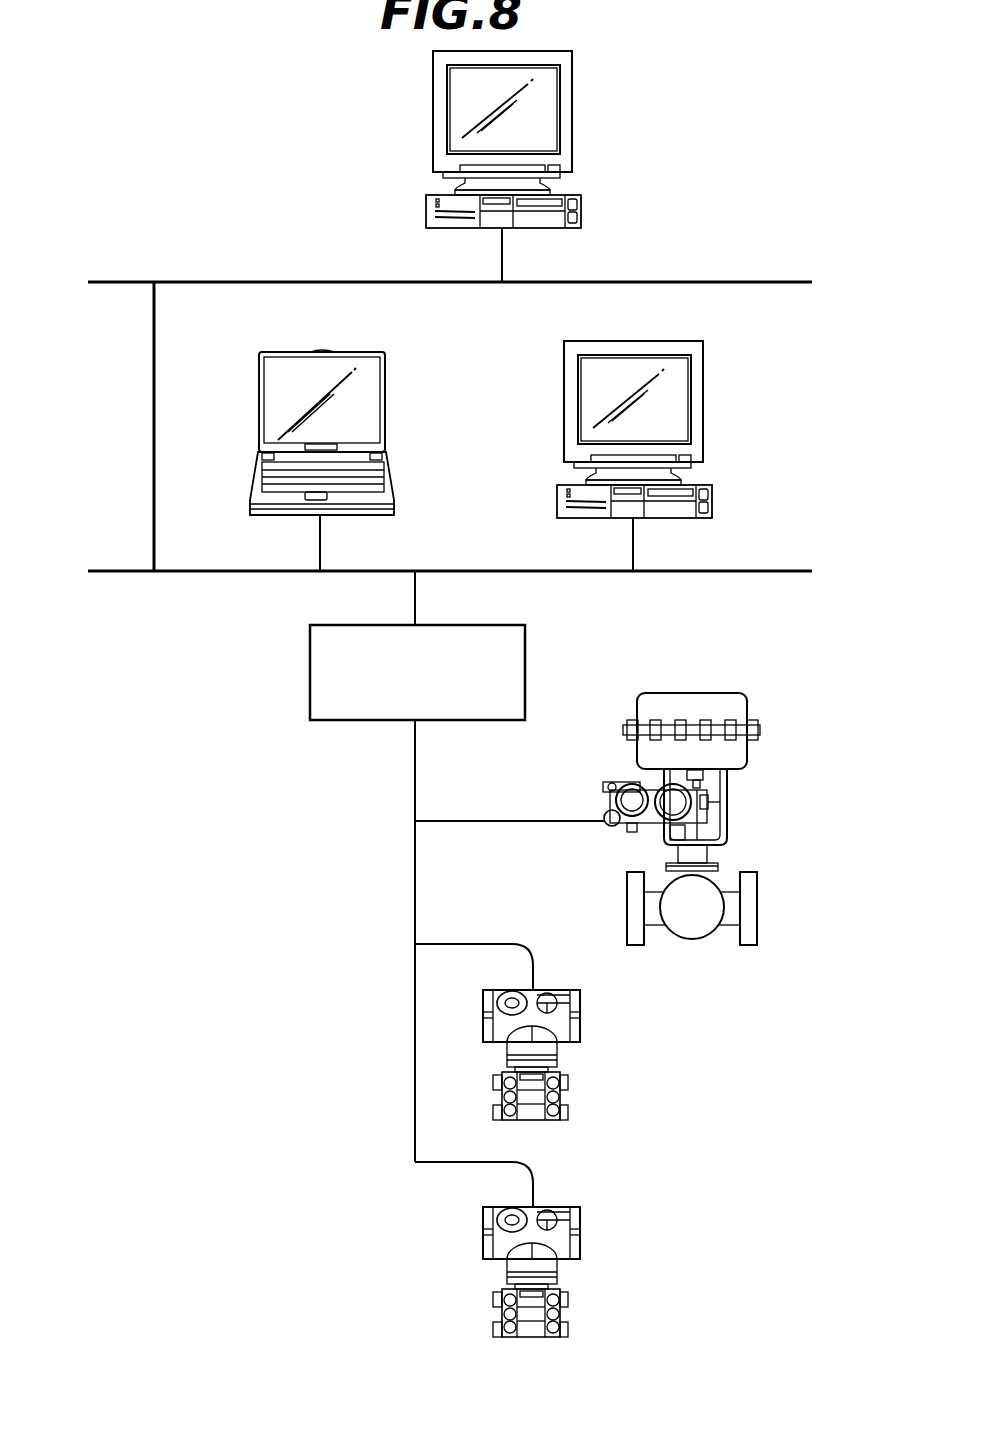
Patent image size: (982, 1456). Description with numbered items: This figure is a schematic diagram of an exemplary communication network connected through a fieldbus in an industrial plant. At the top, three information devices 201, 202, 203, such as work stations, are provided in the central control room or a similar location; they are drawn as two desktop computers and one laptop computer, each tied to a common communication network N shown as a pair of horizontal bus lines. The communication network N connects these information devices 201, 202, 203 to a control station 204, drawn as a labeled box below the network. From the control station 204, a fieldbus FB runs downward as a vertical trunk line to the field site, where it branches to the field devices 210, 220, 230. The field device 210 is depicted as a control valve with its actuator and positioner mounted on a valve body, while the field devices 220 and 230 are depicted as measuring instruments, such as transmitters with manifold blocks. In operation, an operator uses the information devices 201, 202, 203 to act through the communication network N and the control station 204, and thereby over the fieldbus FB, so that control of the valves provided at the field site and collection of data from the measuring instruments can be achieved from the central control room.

The communication network N is at (193, 282).
The information device 201 is at (575, 93).
The information device 202 is at (387, 377).
The information device 203 is at (701, 373).
The control station 204 is at (525, 653).
The fieldbus FB is at (412, 863).
The field device 210 is at (747, 708).
The field device 220 is at (580, 1026).
The field device 230 is at (580, 1243).